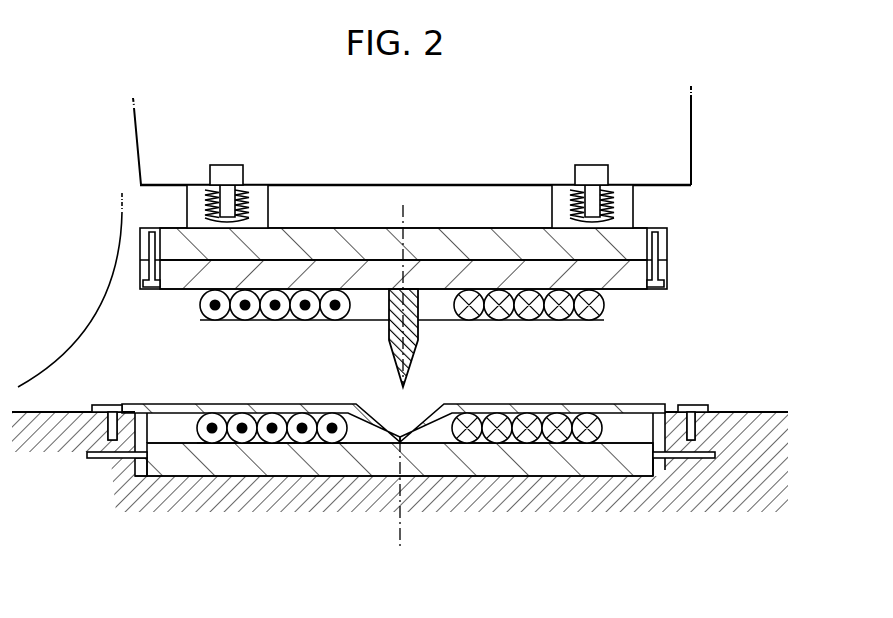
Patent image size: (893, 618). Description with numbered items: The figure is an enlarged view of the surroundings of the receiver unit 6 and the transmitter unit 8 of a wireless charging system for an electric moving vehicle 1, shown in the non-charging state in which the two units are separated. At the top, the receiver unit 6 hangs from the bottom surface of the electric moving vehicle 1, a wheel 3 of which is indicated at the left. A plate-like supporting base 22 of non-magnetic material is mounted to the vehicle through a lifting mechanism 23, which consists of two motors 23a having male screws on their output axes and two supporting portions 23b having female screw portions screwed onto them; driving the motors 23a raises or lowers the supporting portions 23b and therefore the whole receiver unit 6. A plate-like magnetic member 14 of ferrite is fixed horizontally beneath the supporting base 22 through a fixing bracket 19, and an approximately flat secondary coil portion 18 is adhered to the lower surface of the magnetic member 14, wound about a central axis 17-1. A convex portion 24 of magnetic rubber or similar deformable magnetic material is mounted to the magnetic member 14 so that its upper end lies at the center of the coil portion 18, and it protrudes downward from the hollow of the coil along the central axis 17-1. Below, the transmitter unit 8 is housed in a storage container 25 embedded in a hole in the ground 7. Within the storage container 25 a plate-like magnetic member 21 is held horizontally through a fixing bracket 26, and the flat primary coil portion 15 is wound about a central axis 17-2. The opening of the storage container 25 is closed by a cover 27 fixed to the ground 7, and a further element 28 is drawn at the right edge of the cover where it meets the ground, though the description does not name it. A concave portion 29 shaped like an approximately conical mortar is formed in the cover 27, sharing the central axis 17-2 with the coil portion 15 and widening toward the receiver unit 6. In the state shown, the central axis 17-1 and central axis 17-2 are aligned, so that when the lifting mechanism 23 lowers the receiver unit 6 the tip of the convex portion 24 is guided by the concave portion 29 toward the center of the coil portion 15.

The electric moving vehicle 1 is at (692, 133).
The wheel 3 is at (88, 318).
The receiver unit 6 is at (730, 260).
The ground 7 is at (753, 413).
The transmitter unit 8 is at (612, 521).
The magnetic member 14 is at (318, 268).
The coil portion (primary coil) 15 is at (303, 413).
The central axis 17-1 is at (405, 220).
The central axis 17-2 is at (402, 530).
The coil portion (secondary coil) 18 is at (213, 318).
The fixing bracket 19 is at (658, 240).
The magnetic member 21 is at (271, 465).
The supporting base 22 is at (376, 238).
The lifting mechanism 23 is at (419, 159).
The motor 23a is at (219, 165).
The supporting portion 23b is at (261, 186).
The convex portion 24 is at (419, 349).
The storage container 25 is at (668, 428).
The fixing bracket 26 is at (96, 458).
The cover 27 is at (553, 404).
The positioning pin 28 is at (690, 405).
The concave portion 29 is at (383, 413).